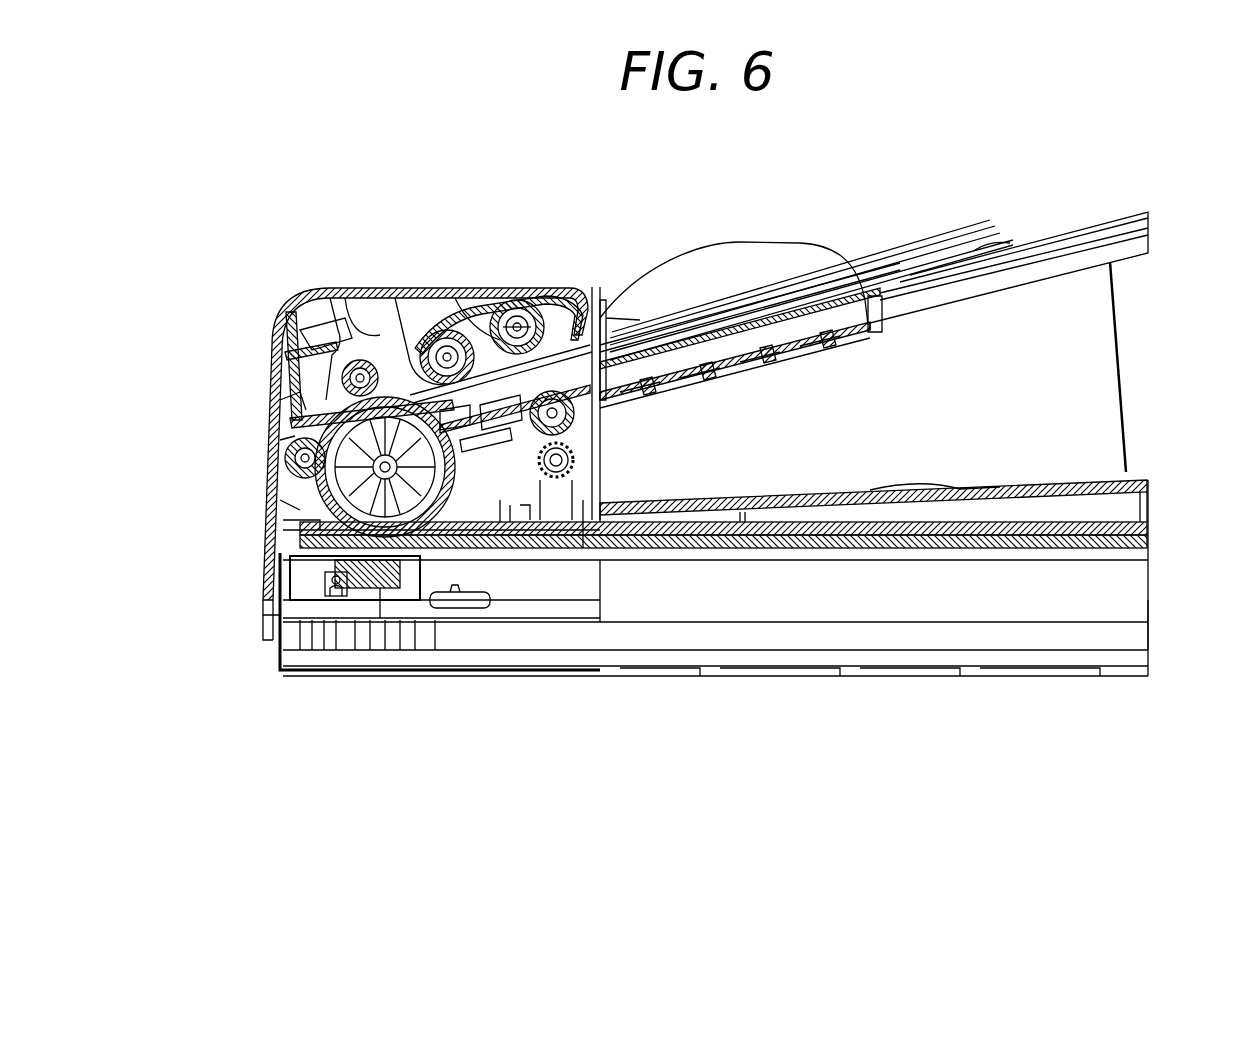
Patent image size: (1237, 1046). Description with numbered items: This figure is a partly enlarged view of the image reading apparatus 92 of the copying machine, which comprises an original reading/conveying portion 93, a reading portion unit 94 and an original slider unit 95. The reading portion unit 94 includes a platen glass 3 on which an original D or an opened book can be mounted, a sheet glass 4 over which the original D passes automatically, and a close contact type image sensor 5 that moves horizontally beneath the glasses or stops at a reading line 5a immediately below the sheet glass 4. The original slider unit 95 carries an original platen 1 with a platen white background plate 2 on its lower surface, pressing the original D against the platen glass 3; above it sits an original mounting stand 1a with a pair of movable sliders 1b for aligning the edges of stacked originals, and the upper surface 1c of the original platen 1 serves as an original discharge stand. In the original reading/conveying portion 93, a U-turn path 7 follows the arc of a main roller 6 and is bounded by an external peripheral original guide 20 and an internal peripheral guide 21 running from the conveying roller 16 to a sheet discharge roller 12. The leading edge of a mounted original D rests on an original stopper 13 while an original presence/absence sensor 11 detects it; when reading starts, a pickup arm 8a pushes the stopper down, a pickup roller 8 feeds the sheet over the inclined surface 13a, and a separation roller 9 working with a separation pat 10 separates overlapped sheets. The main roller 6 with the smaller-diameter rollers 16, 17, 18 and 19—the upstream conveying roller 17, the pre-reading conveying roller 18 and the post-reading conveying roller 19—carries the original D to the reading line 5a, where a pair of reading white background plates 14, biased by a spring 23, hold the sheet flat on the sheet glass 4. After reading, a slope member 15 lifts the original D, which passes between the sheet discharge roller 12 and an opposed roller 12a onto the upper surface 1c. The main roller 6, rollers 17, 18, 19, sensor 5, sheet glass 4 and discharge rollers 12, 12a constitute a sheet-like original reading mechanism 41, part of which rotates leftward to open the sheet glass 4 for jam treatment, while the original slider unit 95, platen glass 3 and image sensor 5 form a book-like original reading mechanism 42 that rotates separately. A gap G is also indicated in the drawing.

The original platen 1 is at (852, 488).
The original mounting stand 1a is at (1105, 232).
The movable slider 1b is at (722, 258).
The upper surface of the original platen 1c is at (766, 496).
The platen white background plate 2 is at (935, 508).
The platen glass 3 is at (965, 548).
The sheet glass 4 is at (282, 655).
The close contact type image sensor 5 is at (400, 640).
The reading line 5a is at (374, 630).
The main roller 6 is at (320, 400).
The U-turn path 7 is at (282, 474).
The pickup roller 8 is at (521, 290).
The pickup arm 8a is at (540, 288).
The separation roller 9 is at (445, 288).
The separation pat 10 is at (470, 290).
The original presence/absence sensor 11 is at (577, 290).
The sheet discharge roller 12 is at (622, 345).
The opposed roller 12a is at (583, 548).
The original stopper 13 is at (601, 300).
The inclined surface 13a is at (492, 290).
The reading white background plate 14 is at (336, 640).
The slope member 15 is at (436, 578).
The conveying roller 16 is at (333, 288).
The upstream conveying roller 17 is at (290, 415).
The pre-reading conveying roller 18 is at (283, 528).
The post-reading conveying roller 19 is at (502, 522).
The external peripheral original guide 20 is at (290, 494).
The internal peripheral guide 21 is at (525, 548).
The spring 23 is at (265, 575).
The sheet-like original reading mechanism 41 is at (262, 440).
The book-like original reading mechanism 42 is at (1140, 458).
The image reading apparatus 92 is at (666, 222).
The original reading/conveying portion 93 is at (404, 284).
The reading portion unit 94 is at (1152, 607).
The original slider unit 95 is at (820, 236).
The original D is at (960, 243).
The gap G is at (258, 632).